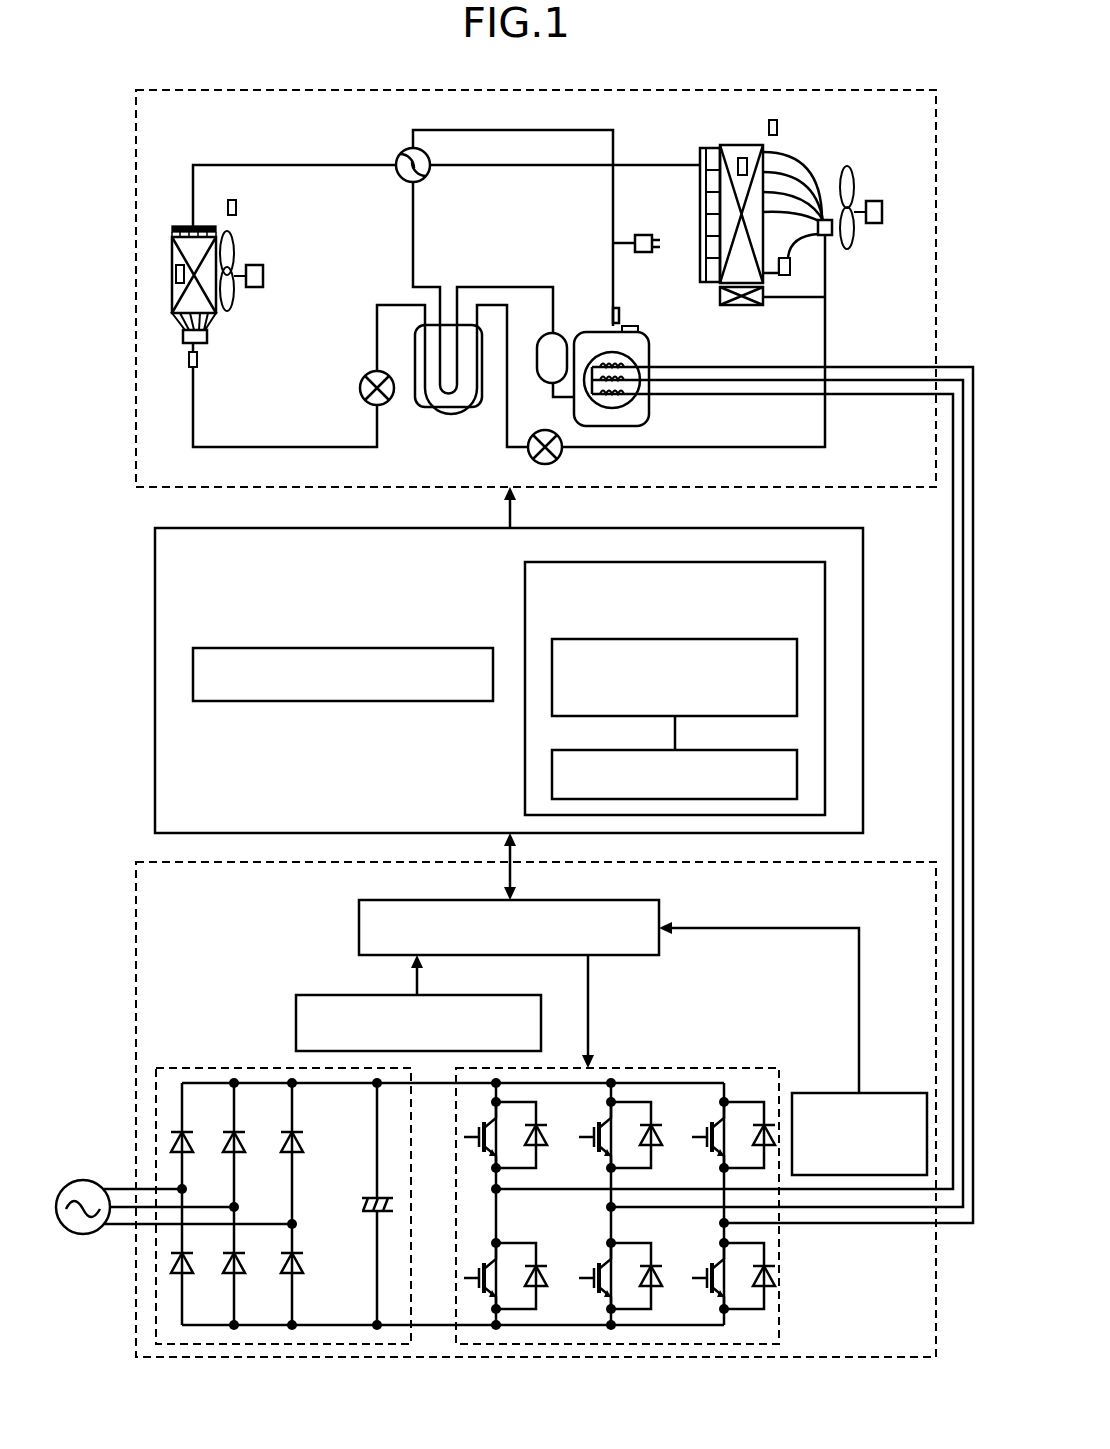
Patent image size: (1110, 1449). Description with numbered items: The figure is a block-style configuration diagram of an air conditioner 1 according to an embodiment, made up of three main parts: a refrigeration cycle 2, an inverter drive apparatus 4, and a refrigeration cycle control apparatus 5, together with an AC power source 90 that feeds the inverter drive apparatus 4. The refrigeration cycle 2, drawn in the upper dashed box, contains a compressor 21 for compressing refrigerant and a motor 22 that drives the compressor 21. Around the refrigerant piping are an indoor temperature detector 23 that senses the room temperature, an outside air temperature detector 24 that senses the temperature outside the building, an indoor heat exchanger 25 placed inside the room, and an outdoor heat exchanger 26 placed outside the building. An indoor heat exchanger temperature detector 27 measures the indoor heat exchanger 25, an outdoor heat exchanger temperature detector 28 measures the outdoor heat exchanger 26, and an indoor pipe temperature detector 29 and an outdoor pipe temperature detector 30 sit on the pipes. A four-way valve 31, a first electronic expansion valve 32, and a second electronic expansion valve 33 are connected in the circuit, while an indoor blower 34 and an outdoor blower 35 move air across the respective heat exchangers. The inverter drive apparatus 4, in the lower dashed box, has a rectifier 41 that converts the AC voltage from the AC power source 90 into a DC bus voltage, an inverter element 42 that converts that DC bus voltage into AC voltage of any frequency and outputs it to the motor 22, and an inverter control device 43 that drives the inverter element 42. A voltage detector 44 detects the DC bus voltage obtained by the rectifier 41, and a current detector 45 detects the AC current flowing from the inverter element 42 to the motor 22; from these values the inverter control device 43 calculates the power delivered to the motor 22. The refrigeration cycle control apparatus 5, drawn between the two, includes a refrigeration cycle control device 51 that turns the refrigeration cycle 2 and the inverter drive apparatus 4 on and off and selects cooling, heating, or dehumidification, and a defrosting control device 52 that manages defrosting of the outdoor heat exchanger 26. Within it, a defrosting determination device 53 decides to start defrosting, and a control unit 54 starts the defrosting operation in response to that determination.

The air conditioner 1 is at (848, 82).
The refrigeration cycle 2 is at (136, 158).
The inverter drive apparatus 4 is at (136, 956).
The refrigeration cycle control apparatus 5 is at (792, 512).
The compressor 21 is at (595, 332).
The motor 22 is at (640, 361).
The indoor temperature detector 23 is at (238, 208).
The outside air temperature detector 24 is at (779, 128).
The indoor heat exchanger 25 is at (172, 248).
The outdoor heat exchanger 26 is at (765, 153).
The indoor heat exchanger temperature detector 27 is at (176, 275).
The outdoor heat exchanger temperature detector 28 is at (742, 158).
The indoor pipe temperature detector 29 is at (200, 357).
The outdoor pipe temperature detector 30 is at (792, 266).
The four-way valve 31 is at (398, 158).
The first electronic expansion valve 32 is at (358, 388).
The second electronic expansion valve 33 is at (538, 430).
The indoor blower 34 is at (265, 278).
The outdoor blower 35 is at (874, 201).
The rectifier 41 is at (197, 1053).
The inverter element 42 is at (680, 1053).
The inverter control device 43 is at (573, 884).
The voltage detector 44 is at (480, 995).
The current detector 45 is at (885, 1093).
The refrigeration cycle control device 51 is at (434, 648).
The defrosting control device 52 is at (739, 562).
The defrosting determination device 53 is at (720, 639).
The control unit 54 is at (720, 750).
The AC power source 90 is at (94, 1181).